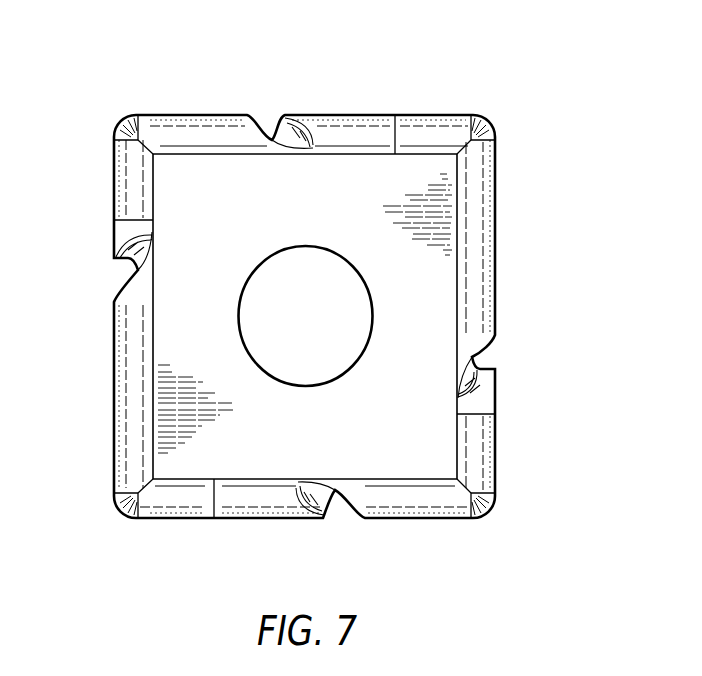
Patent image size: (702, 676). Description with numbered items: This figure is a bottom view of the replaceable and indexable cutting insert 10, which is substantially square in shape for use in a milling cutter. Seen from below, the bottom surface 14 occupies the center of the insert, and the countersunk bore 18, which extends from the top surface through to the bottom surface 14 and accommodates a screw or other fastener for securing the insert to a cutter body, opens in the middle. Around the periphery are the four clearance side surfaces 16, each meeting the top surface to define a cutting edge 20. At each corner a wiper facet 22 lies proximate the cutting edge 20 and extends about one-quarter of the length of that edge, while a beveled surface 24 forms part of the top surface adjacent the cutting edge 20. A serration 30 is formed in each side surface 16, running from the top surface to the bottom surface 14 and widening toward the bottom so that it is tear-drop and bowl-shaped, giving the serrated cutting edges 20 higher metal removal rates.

The cutting insert 10 is at (543, 62).
The bottom surface 14 is at (228, 180).
The clearance side surfaces 16 is at (218, 134).
The countersunk bore 18 is at (240, 317).
The cutting edge 20 is at (352, 115).
The wiper facet 22 is at (425, 114).
The beveled surface 24 is at (166, 114).
The serration 30 is at (272, 140).